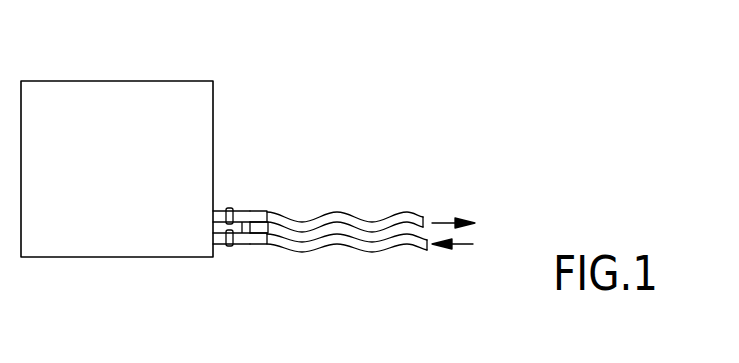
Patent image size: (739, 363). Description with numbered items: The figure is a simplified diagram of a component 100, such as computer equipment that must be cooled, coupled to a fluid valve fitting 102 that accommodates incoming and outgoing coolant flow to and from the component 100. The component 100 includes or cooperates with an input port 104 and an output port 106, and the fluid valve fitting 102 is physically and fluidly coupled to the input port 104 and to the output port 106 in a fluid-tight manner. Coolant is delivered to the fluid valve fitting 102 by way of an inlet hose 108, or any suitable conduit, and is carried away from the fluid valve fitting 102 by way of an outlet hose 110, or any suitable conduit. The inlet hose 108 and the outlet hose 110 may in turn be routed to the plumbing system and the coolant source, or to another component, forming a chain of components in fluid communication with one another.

The component 100 is at (79, 81).
The fluid valve fitting 102 is at (252, 211).
The input port 104 is at (216, 248).
The output port 106 is at (227, 208).
The inlet hose 108 is at (355, 252).
The outlet hose 110 is at (357, 212).